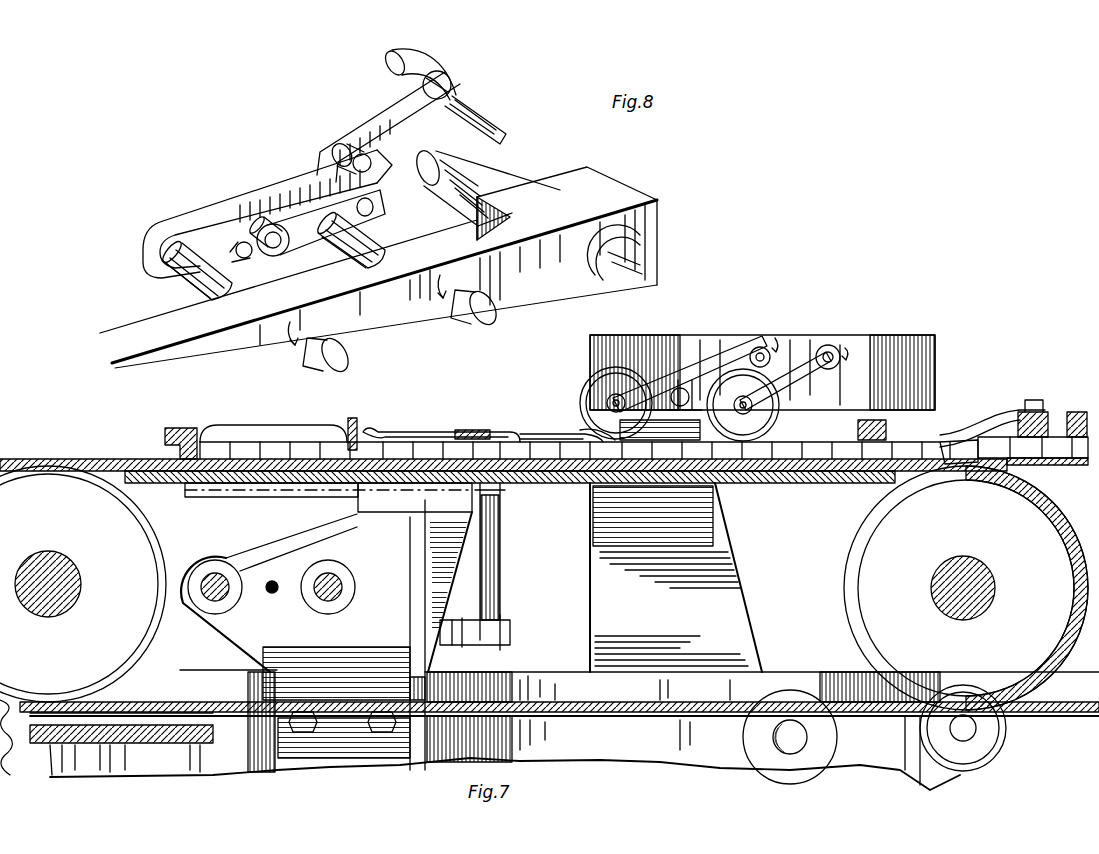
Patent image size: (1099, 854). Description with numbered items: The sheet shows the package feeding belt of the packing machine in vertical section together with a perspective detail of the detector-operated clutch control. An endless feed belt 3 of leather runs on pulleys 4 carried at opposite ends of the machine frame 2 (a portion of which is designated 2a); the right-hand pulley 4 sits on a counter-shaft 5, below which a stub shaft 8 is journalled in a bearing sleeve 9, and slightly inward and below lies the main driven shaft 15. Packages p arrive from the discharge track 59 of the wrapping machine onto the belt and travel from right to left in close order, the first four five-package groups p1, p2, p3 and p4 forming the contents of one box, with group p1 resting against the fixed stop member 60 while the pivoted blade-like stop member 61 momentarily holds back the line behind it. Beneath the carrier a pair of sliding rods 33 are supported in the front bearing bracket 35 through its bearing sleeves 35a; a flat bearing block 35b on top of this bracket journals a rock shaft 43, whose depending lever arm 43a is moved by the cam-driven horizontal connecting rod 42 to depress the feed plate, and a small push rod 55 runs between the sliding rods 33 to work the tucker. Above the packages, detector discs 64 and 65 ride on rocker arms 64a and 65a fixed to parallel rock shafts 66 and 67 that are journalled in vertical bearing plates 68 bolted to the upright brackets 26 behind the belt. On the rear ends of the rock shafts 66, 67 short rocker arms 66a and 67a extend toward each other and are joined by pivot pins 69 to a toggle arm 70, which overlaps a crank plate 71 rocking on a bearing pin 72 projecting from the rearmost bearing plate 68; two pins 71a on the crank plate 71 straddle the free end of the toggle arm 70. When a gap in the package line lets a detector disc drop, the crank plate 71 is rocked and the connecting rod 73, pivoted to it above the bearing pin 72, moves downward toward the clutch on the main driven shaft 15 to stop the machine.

In FIG. 7, the machine frame 2 is at (549, 645).
In FIG. 7, the frame bracket 2a is at (868, 765).
In FIG. 7, the endless feed belt 3 is at (93, 459).
In FIG. 7, the pulley 4 is at (47, 470).
In FIG. 7, the counter-shaft 5 is at (985, 580).
In FIG. 7, the stub shaft 8 is at (978, 725).
In FIG. 7, the bearing sleeve 9 is at (985, 738).
In FIG. 7, the main driven shaft 15 is at (803, 738).
In FIG. 7, the upright bracket 26 is at (735, 535).
In FIG. 7, the sliding rod 33 is at (232, 596).
In FIG. 7, the front bearing bracket 35 is at (300, 533).
In FIG. 7, the bearing sleeve 35a is at (208, 605).
In FIG. 7, the flat bearing block 35b is at (415, 497).
In FIG. 7, the horizontal connecting rod 42 is at (465, 640).
In FIG. 7, the rock shaft 43 is at (185, 490).
In FIG. 7, the depending lever arm 43a is at (502, 566).
In FIG. 7, the push rod 55 is at (275, 580).
In FIG. 7, the discharge track 59 is at (1058, 468).
In FIG. 7, the stop member 60 is at (183, 428).
In FIG. 7, the coacting stop member 61 is at (356, 420).
In FIG. 7, the detector disc 64 is at (595, 388).
In FIG. 7, the rocker arm 64a is at (705, 375).
In FIG. 7, the detector disc 65 is at (743, 405).
In FIG. 7, the rocker arm 65a is at (805, 378).
In FIG. 8, the rock shaft 66 is at (350, 360).
In FIG. 7, the rock shaft 66 is at (762, 348).
In FIG. 8, the short rocker arm 66a is at (197, 225).
In FIG. 8, the rock shaft 67 is at (498, 307).
In FIG. 7, the rock shaft 67 is at (830, 347).
In FIG. 8, the short rocker arm 67a is at (298, 205).
In FIG. 8, the bearing plate 68 is at (140, 330).
In FIG. 7, the bearing plate 68 is at (882, 340).
In FIG. 8, the pivot pin 69 is at (247, 256).
In FIG. 8, the toggle arm 70 is at (274, 182).
In FIG. 8, the crank plate 71 is at (374, 103).
In FIG. 8, the pin 71a is at (365, 150).
In FIG. 8, the bearing pin 72 is at (492, 170).
In FIG. 8, the connecting rod 73 is at (500, 140).
In FIG. 7, the package p is at (935, 452).
In FIG. 7, the first package group p1 is at (345, 438).
In FIG. 7, the second package group p2 is at (518, 432).
In FIG. 7, the third package group p3 is at (600, 428).
In FIG. 7, the fourth package group p4 is at (788, 452).